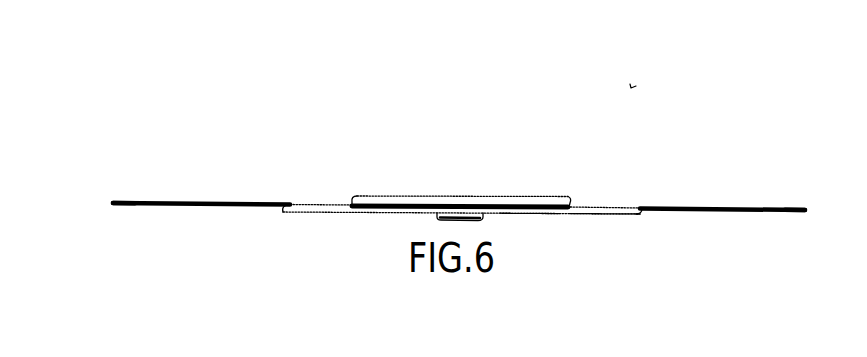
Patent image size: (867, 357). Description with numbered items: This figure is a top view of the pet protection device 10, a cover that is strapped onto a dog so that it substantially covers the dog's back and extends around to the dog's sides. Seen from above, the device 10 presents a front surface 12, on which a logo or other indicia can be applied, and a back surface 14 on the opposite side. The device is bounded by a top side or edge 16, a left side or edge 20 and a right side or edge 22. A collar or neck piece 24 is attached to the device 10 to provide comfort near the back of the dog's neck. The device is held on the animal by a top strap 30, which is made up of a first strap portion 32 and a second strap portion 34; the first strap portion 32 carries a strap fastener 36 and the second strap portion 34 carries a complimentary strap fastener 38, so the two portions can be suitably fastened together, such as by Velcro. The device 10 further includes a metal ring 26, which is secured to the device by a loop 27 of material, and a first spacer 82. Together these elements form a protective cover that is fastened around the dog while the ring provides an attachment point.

The pet protection device 10 is at (638, 82).
The front surface 12 is at (361, 236).
The back surface 14 is at (347, 191).
The top side or edge 16 is at (583, 213).
The left side or edge 20 is at (264, 219).
The right side or edge 22 is at (657, 224).
The collar or neck piece 24 is at (517, 211).
The metal ring 26 is at (437, 217).
The loop 27 is at (462, 225).
The top strap 30 is at (165, 148).
The first strap portion 32 is at (739, 204).
The second strap portion 34 is at (146, 208).
The strap fastener 36 is at (772, 215).
The complimentary strap fastener 38 is at (183, 186).
The first spacer 82 is at (503, 195).